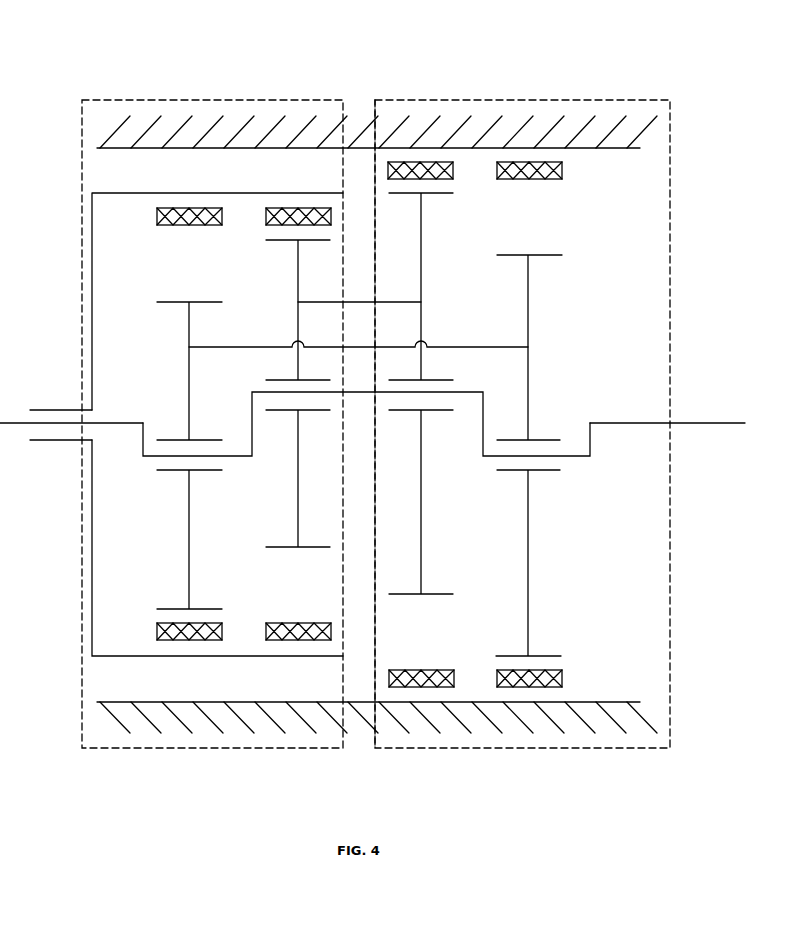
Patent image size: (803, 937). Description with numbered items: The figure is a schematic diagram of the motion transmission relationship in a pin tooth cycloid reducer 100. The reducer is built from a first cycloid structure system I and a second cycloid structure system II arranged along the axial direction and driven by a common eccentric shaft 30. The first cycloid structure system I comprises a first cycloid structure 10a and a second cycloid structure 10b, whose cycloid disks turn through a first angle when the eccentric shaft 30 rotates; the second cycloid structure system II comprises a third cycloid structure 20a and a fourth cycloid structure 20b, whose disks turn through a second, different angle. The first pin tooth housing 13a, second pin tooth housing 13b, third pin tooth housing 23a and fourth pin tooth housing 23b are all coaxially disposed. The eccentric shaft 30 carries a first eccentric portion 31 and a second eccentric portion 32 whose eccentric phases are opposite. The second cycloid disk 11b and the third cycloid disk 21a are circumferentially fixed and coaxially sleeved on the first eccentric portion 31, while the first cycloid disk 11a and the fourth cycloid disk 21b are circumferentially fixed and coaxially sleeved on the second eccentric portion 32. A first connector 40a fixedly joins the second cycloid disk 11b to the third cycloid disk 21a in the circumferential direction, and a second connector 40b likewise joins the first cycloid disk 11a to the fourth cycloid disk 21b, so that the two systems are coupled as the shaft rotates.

The pin tooth cycloid reducer 100 is at (158, 60).
The first cycloid structure system I is at (525, 100).
The second cycloid structure system II is at (203, 100).
The first cycloid structure 10a is at (579, 455).
The first cycloid disk 11a is at (530, 620).
The first pin tooth housing 13a is at (572, 700).
The second cycloid structure 10b is at (437, 286).
The second cycloid disk 11b is at (421, 286).
The second pin tooth housing 13b is at (450, 148).
The third cycloid structure 20a is at (244, 287).
The third cycloid disk 21a is at (288, 242).
The third pin tooth housing 23a is at (262, 195).
The fourth cycloid structure 20b is at (215, 562).
The fourth cycloid disk 21b is at (175, 608).
The fourth pin tooth housing 23b is at (133, 655).
The eccentric shaft 30 is at (715, 425).
The first eccentric portion 31 is at (362, 395).
The second eccentric portion 32 is at (238, 460).
The first connector 40a is at (392, 302).
The second connector 40b is at (488, 347).